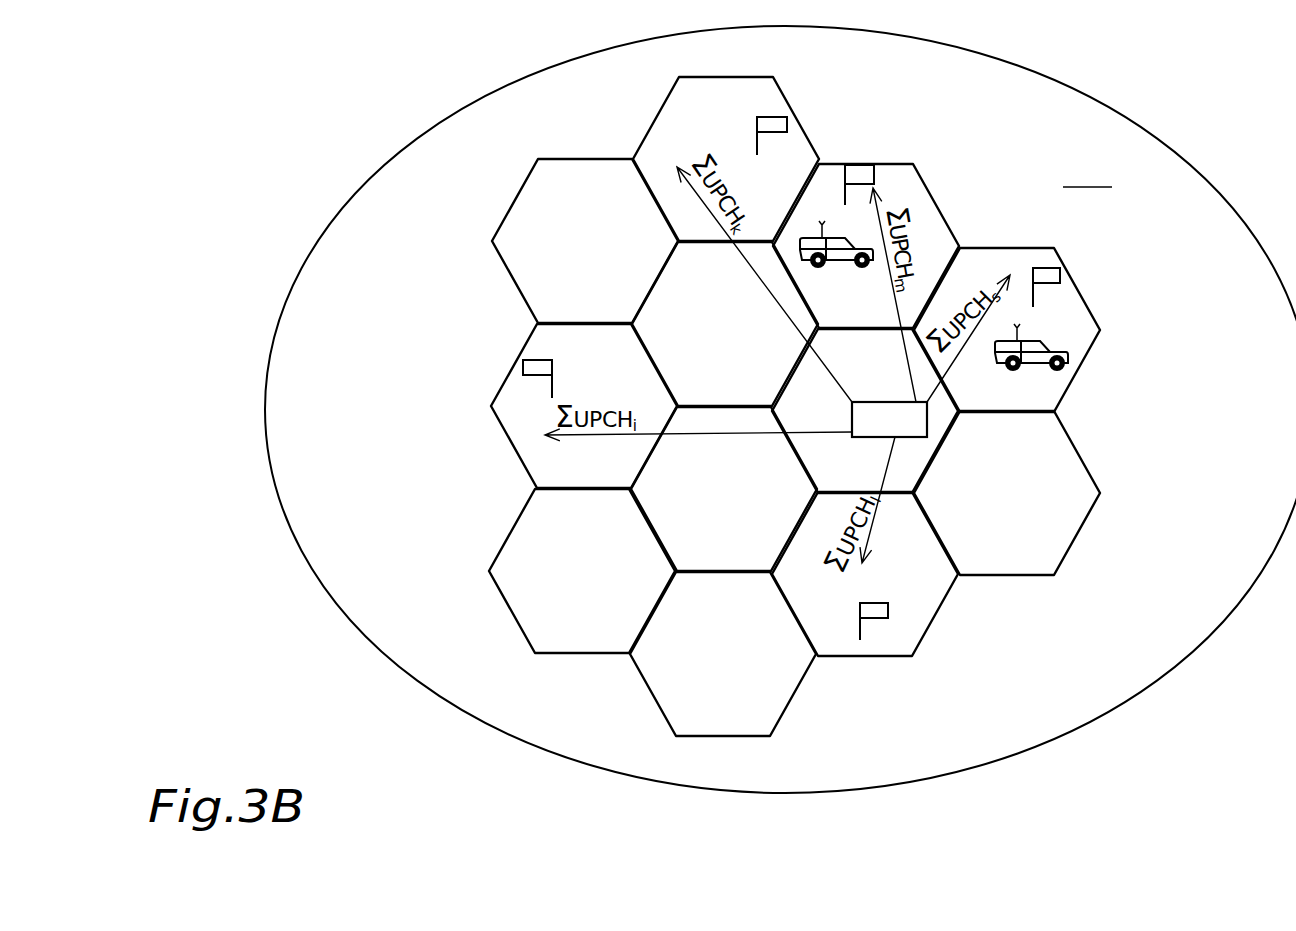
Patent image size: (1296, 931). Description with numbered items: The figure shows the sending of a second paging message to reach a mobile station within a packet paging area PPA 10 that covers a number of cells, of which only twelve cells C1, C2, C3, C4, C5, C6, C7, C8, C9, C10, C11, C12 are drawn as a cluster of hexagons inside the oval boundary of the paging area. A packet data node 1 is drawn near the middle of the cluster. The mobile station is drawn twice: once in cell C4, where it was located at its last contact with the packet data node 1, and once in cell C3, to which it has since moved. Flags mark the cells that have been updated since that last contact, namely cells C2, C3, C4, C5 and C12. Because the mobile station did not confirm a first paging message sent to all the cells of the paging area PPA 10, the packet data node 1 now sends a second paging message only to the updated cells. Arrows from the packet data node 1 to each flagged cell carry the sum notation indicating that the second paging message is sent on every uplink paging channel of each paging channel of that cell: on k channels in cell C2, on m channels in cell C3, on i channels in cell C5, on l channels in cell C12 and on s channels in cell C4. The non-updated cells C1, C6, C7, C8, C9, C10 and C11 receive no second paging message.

The packet paging area PPA 10 is at (1043, 73).
The packet data node PDN 1 is at (927, 420).
The packet paging area PPA is at (1087, 173).
The cell C1 is at (585, 241).
The cell C2 is at (726, 159).
The cell C3 is at (866, 246).
The cell C4 is at (1007, 330).
The cell C5 is at (584, 406).
The cell C6 is at (725, 324).
The cell C7 is at (865, 411).
The cell C8 is at (1007, 493).
The cell C9 is at (582, 571).
The cell C10 is at (724, 489).
The cell C11 is at (723, 654).
The cell C12 is at (865, 574).